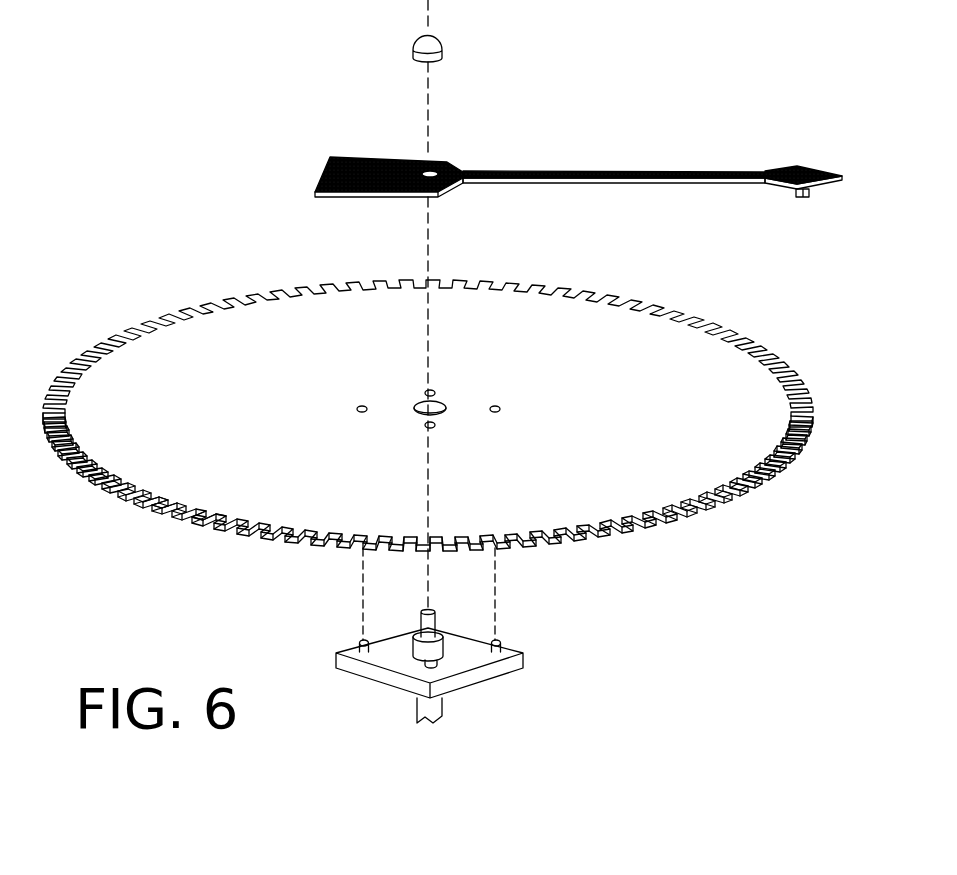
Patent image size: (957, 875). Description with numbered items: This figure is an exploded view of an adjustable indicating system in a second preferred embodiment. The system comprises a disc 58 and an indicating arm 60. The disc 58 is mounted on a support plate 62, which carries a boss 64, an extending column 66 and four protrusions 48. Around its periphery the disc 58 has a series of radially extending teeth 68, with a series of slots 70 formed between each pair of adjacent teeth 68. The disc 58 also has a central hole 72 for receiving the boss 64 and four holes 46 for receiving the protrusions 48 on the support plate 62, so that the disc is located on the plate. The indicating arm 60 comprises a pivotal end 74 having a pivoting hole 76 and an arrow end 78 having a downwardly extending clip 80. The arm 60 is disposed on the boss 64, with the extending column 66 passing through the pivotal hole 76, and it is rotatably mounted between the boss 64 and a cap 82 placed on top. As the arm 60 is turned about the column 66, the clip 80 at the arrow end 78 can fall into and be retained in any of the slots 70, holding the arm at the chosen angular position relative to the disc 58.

The holes 46 is at (500, 408).
The protrusions 48 is at (500, 647).
The disc 58 is at (200, 338).
The indicating arm 60 is at (698, 170).
The support plate 62 is at (477, 683).
The boss 64 is at (445, 638).
The extending column 66 is at (413, 628).
The teeth 68 is at (190, 523).
The slots 70 is at (223, 532).
The central hole 72 is at (440, 402).
The pivotal end 74 is at (318, 178).
The pivoting hole 76 is at (435, 165).
The arrow end 78 is at (806, 157).
The clip 80 is at (803, 200).
The cap 82 is at (445, 55).